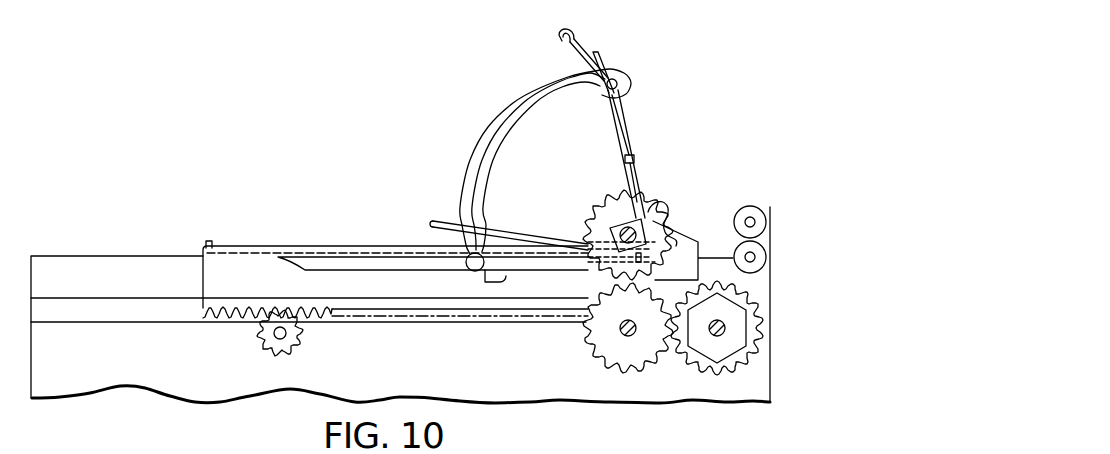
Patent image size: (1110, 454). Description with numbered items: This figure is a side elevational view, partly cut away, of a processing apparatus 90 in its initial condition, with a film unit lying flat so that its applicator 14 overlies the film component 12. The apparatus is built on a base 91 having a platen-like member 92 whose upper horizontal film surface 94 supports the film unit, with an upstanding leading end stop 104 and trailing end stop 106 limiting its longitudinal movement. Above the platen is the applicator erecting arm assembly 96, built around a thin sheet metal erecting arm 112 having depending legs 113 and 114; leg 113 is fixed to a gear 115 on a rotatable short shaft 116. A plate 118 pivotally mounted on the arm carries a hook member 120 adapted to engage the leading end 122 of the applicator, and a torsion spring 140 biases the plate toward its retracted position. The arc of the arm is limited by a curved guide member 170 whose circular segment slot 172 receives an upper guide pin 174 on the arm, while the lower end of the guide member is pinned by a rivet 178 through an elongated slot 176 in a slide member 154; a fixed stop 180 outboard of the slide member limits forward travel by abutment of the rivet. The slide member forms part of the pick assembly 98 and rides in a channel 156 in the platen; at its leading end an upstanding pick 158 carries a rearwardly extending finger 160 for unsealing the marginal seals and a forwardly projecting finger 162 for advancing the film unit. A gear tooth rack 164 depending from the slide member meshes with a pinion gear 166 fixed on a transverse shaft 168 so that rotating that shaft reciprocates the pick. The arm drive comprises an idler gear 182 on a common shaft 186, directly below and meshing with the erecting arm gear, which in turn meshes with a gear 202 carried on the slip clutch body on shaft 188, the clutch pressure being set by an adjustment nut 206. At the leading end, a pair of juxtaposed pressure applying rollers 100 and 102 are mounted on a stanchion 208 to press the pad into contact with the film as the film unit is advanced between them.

The film component 12 is at (262, 250).
The applicator 14 is at (439, 208).
The processing apparatus 90 is at (715, 152).
The base 91 is at (63, 375).
The platen-like member 92 is at (100, 308).
The upper horizontal film surface 94 is at (192, 255).
The applicator erecting arm assembly 96 is at (645, 142).
The pick assembly 98 is at (326, 339).
The pressure applying roller 100 is at (758, 210).
The pressure applying roller 102 is at (763, 250).
The leading end stop 104 is at (640, 237).
The trailing end stop 106 is at (212, 240).
The erecting arm 112 is at (612, 125).
The depending leg 113 is at (637, 172).
The depending leg 114 is at (537, 232).
The gear 115 is at (612, 188).
The short shaft 116 is at (610, 230).
The plate 118 is at (582, 66).
The hook member 120 is at (567, 27).
The leading end 122 is at (430, 221).
The torsion spring 140 is at (630, 126).
The slide member 154 is at (368, 288).
The channel 156 is at (186, 293).
The pick 158 is at (681, 216).
The rearwardly extending finger 160 is at (668, 212).
The forwardly projecting finger 162 is at (693, 240).
The gear tooth rack 164 is at (230, 315).
The pinion gear 166 is at (267, 348).
The shaft 168 is at (282, 342).
The curved guide member 170 is at (500, 123).
The circular segment slot 172 is at (528, 117).
The upper guide pin 174 is at (620, 80).
The elongated slot 176 is at (380, 262).
The rivet 178 is at (468, 266).
The stop 180 is at (500, 282).
The idler gear 182 is at (585, 340).
The shaft 186 is at (636, 331).
The shaft 188 is at (722, 328).
The gear 202 is at (738, 367).
The adjustment nut 206 is at (745, 318).
The stanchion 208 is at (765, 242).